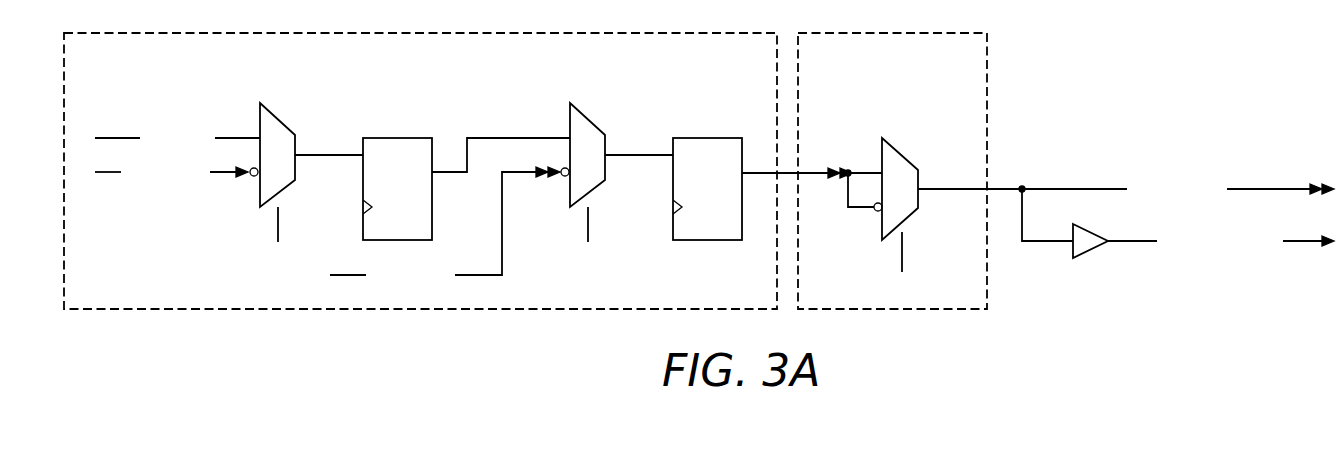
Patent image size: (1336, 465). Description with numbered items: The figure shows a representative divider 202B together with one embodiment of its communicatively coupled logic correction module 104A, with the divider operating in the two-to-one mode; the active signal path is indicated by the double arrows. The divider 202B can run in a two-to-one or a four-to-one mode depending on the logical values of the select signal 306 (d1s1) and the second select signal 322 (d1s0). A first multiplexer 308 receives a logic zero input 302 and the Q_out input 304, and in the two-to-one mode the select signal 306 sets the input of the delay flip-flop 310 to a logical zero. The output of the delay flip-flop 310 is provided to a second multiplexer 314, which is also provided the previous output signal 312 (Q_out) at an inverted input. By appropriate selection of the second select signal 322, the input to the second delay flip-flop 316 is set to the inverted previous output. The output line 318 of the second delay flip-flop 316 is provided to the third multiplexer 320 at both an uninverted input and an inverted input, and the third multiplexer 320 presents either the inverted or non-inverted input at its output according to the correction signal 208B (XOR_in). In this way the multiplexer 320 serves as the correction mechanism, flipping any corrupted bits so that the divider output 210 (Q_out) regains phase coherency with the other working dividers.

The Logic 0 input 302 is at (112, 138).
The Q_out 1:0 input 304 is at (112, 172).
The select signal 306 is at (278, 266).
The first multiplexer 308 is at (280, 118).
The delay flip-flop 310 is at (398, 138).
The previous output signal 312 is at (395, 288).
The second multiplexer 314 is at (590, 120).
The second delay flip-flop 316 is at (715, 138).
The flip-flop output line 318 is at (760, 172).
The third multiplexer 320 is at (900, 148).
The second select signal 322 is at (600, 275).
The logic correction module 104A is at (987, 102).
The divider 202B is at (608, 309).
The correction signal 208B is at (932, 300).
The Q_out 0:1 output 210 is at (1248, 190).